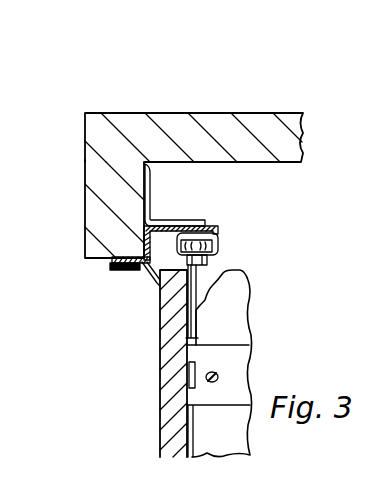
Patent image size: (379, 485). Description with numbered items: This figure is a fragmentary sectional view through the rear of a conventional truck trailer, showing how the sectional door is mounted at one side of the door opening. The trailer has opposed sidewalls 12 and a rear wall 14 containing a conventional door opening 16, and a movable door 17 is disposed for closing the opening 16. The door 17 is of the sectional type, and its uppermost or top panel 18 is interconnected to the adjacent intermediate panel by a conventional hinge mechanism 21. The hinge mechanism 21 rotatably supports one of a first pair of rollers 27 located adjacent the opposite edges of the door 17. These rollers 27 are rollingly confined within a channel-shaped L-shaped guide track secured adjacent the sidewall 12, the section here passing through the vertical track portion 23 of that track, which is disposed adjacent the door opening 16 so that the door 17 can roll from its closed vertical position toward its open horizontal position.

The sidewall 12 is at (188, 128).
The rear wall 14 is at (98, 183).
The door opening 16 is at (93, 263).
The door 17 is at (158, 432).
The top panel 18 is at (165, 357).
The hinge mechanism 21 is at (208, 265).
The vertical track portion 23 is at (213, 241).
The rollers 27 is at (205, 243).